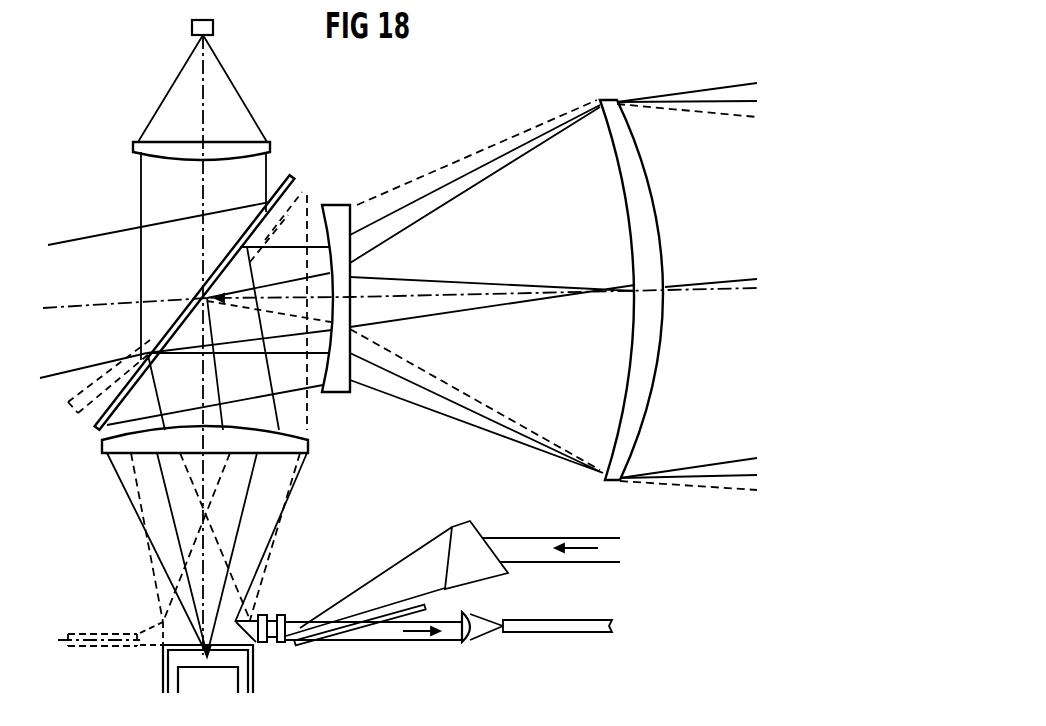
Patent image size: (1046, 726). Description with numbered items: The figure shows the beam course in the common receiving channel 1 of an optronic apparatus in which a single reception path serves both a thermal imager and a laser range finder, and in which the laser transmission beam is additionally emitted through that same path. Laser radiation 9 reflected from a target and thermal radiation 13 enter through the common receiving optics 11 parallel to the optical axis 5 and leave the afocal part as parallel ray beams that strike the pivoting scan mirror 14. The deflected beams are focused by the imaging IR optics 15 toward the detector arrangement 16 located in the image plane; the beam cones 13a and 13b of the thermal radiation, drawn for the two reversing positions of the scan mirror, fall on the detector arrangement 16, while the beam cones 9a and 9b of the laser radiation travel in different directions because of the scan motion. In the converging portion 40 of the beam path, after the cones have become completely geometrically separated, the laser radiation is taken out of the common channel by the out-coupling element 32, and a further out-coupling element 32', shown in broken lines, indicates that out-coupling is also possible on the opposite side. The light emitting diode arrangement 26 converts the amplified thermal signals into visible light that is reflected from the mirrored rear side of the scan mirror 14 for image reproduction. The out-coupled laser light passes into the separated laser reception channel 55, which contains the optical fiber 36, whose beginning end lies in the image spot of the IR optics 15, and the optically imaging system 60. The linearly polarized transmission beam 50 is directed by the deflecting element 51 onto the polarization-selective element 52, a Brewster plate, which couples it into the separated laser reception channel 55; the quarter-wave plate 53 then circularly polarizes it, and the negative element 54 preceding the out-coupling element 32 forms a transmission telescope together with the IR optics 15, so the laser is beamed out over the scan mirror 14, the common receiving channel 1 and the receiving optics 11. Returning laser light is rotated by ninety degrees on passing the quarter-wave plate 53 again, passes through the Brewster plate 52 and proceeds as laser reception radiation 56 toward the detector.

The common receiving channel 1 is at (531, 413).
The optical axis 5 is at (527, 295).
The laser radiation 9 is at (733, 103).
The beam cone of the laser radiation 9a is at (268, 580).
The beam cone of the laser radiation 9b is at (152, 568).
The common receiving optics 11 is at (341, 213).
The thermal radiation 13 is at (709, 89).
The beam cone of the thermal radiation 13a is at (128, 502).
The beam cone of the thermal radiation 13b is at (285, 497).
The scan mirror 14 is at (293, 152).
The IR optics 15 is at (102, 449).
The detector arrangement 16 is at (257, 665).
The light emitting diode arrangement 26 is at (213, 28).
The out-coupling element 32 is at (259, 608).
The further out-coupling element 32' is at (110, 658).
The optical fiber 36 is at (593, 633).
The converging portion of the beam path 40 is at (276, 529).
The transmission beam 50 is at (488, 535).
The deflecting element 51 is at (499, 573).
The polarization-selective element 52 is at (366, 632).
The quarter-wave plate 53 is at (282, 644).
The negative element 54 is at (264, 643).
The separated laser reception channel 55 is at (283, 626).
The laser reception radiation 56 is at (410, 641).
The optically imaging system 60 is at (465, 643).